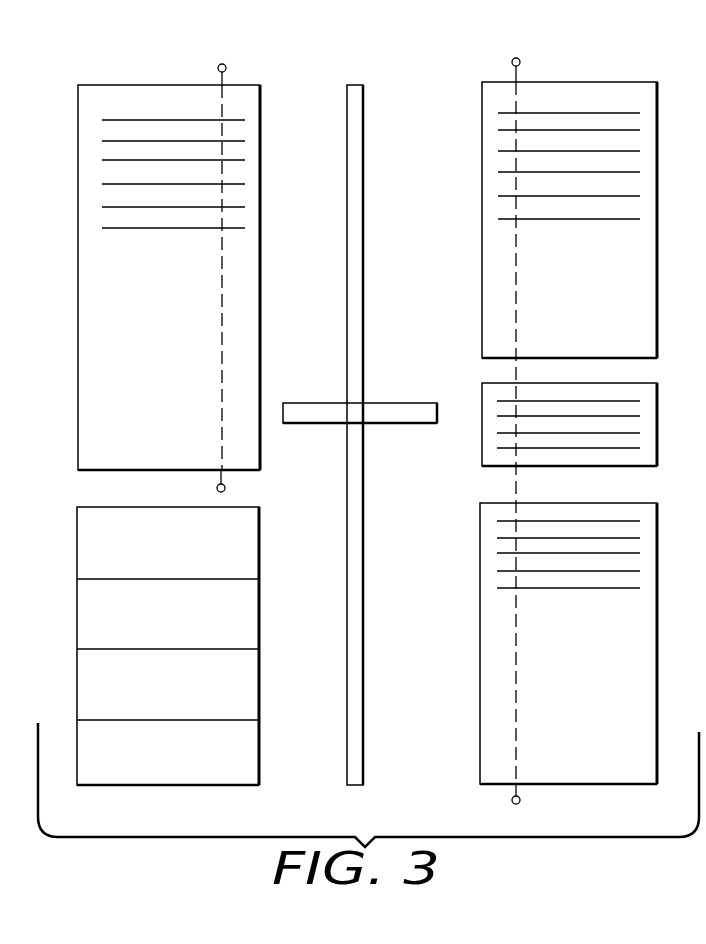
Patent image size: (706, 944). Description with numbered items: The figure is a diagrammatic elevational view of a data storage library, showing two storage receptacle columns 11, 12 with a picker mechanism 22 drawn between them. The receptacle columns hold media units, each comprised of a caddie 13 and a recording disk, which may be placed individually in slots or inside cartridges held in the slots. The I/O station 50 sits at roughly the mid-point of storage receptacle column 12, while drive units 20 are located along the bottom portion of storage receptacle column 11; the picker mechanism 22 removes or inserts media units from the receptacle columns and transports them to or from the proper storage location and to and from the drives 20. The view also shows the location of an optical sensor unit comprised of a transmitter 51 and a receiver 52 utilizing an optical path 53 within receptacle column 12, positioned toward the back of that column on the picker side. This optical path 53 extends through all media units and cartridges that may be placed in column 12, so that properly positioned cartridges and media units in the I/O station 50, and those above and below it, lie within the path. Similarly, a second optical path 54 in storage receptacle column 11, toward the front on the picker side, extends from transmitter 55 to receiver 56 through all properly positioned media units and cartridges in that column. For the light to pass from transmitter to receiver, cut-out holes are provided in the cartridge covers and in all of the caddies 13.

The storage receptacle column 11 is at (108, 80).
The storage receptacle column 12 is at (628, 70).
The caddie 13 is at (118, 184).
The drive units 20 is at (77, 560).
The picker mechanism 22 is at (364, 112).
The I/O station 50 is at (690, 380).
The transmitter 51 is at (520, 62).
The receiver 52 is at (520, 800).
The optical path 53 is at (550, 276).
The optical path 54 is at (222, 312).
The transmitter 55 is at (226, 66).
The receiver 56 is at (225, 489).